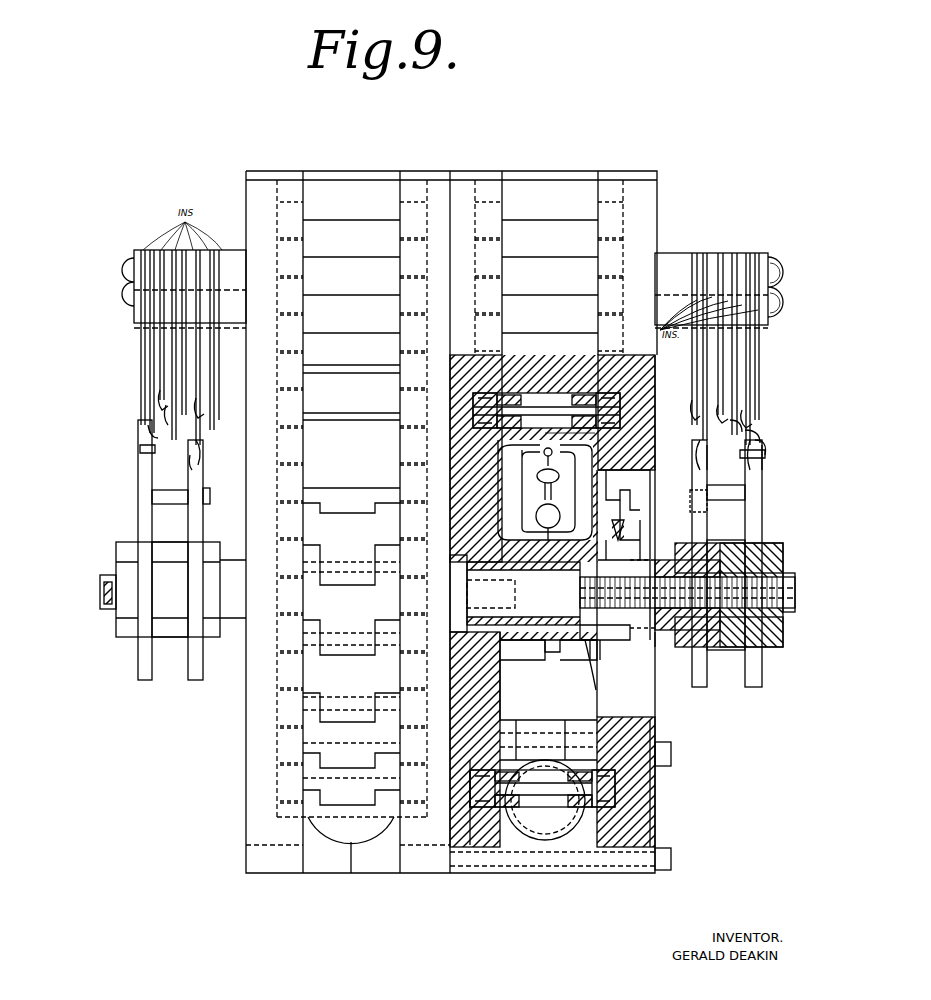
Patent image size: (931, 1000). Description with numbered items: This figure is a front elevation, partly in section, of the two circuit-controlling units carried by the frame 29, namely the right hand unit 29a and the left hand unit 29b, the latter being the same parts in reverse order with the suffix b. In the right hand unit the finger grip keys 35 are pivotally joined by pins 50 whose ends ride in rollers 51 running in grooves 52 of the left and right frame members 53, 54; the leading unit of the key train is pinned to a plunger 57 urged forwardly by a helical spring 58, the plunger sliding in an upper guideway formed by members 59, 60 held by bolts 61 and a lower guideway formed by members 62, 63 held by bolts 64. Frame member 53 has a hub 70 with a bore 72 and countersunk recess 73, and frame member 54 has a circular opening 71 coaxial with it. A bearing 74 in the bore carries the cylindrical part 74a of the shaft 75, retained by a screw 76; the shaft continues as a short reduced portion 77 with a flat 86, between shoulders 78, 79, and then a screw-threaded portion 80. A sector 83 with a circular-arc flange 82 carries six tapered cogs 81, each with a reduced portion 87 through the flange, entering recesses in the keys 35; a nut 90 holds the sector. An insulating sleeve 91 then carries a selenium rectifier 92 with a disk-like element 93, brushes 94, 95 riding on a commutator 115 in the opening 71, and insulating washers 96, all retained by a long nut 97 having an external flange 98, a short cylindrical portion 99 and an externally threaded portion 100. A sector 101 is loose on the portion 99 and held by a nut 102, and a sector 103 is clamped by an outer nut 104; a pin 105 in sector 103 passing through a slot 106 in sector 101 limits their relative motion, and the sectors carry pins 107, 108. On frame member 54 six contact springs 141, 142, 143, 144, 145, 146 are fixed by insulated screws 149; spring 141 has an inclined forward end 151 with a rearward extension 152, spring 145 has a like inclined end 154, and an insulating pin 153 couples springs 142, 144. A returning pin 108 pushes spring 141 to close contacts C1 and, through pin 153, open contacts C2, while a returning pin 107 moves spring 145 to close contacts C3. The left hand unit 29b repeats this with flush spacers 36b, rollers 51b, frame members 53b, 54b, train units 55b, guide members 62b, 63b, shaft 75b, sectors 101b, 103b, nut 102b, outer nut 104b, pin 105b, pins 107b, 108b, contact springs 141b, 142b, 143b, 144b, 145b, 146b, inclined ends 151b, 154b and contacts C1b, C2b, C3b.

The frame 29 is at (454, 893).
The right hand unit 29a is at (546, 890).
The left hand unit 29b is at (334, 889).
The finger grip keys 35 is at (352, 275).
The flush spacers 36b is at (348, 398).
The pins 50 is at (546, 404).
The rollers 51 is at (470, 440).
The rollers 51b is at (290, 640).
The grooves 52 is at (470, 405).
The left frame member 53 is at (432, 877).
The left frame member 53b is at (410, 877).
The right frame member 54 is at (652, 828).
The right frame member 54b is at (253, 735).
The units 55b is at (325, 776).
The plunger 57 is at (510, 872).
The helical spring 58 is at (650, 810).
The upper guideway member 59 is at (518, 755).
The upper guideway member 60 is at (565, 755).
The bolts 61 is at (472, 720).
The lower guideway member 62 is at (553, 877).
The lower guideway member 62b is at (372, 877).
The lower guideway member 63 is at (580, 877).
The lower guideway member 63b is at (300, 877).
The bolts 64 is at (632, 878).
The hub 70 is at (562, 642).
The circular opening 71 is at (657, 755).
The bore 72 is at (470, 515).
The countersunk recess 73 is at (463, 555).
The bearing 74 is at (552, 648).
The cylindrical part 74a is at (540, 646).
The shaft 75 is at (808, 597).
The shaft 75b is at (102, 595).
The screw 76 is at (460, 630).
The short reduced portion 77 is at (580, 580).
The shoulder 78 is at (596, 690).
The shoulder 79 is at (610, 642).
The screw-threaded portion 80 is at (665, 632).
The tapered cog 81 is at (527, 398).
The circular-arc flange 82 is at (535, 458).
The sector 83 is at (556, 520).
The flat 86 is at (491, 594).
The reduced portion 87 is at (540, 482).
The nut 90 is at (603, 633).
The insulating sleeve 91 is at (660, 650).
The selenium rectifier 92 is at (648, 535).
The disk-like element 93 is at (640, 520).
The rectifier brush 94 is at (572, 532).
The rectifier brush 95 is at (640, 505).
The washers 96 is at (608, 560).
The long nut 97 is at (680, 560).
The external flange 98 is at (690, 560).
The short cylindrical portion 99 is at (750, 572).
The externally threaded portion 100 is at (790, 576).
The sector 101 is at (700, 688).
The sector 101b is at (203, 660).
The nut 102 is at (728, 648).
The nut 102b is at (172, 640).
The sector 103 is at (762, 660).
The sector 103b is at (140, 660).
The outer nut 104 is at (784, 630).
The outer nut 104b is at (116, 548).
The pin 105 is at (738, 497).
The pin 105b is at (158, 492).
The slot 106 is at (700, 493).
The pins 107 is at (705, 458).
The pins 107b is at (200, 460).
The pins 108 is at (767, 452).
The pins 108b is at (138, 450).
The commutator 115 is at (570, 439).
The contact spring 141 is at (760, 280).
The contact spring 142 is at (748, 275).
The contact spring 143 is at (735, 275).
The contact spring 144 is at (722, 265).
The contact spring 145 is at (705, 270).
The contact spring 146 is at (693, 260).
The contact spring 141b is at (141, 360).
The contact spring 142b is at (154, 345).
The contact spring 143b is at (164, 330).
The contact spring 144b is at (176, 320).
The contact spring 145b is at (186, 305).
The contact spring 146b is at (200, 290).
The screws 149 is at (785, 282).
The inclined forward end 151 is at (766, 430).
The inclined forward end 151b is at (150, 430).
The rearward extension 152 is at (768, 448).
The insulating pin 153 is at (762, 440).
The inclined forward end 154 is at (755, 458).
The inclined forward end 154b is at (202, 445).
The contacts C1 is at (747, 410).
The contacts C2 is at (722, 406).
The contacts C3 is at (700, 402).
The contacts C1b is at (166, 410).
The contacts C2b is at (160, 392).
The contacts C3b is at (200, 400).